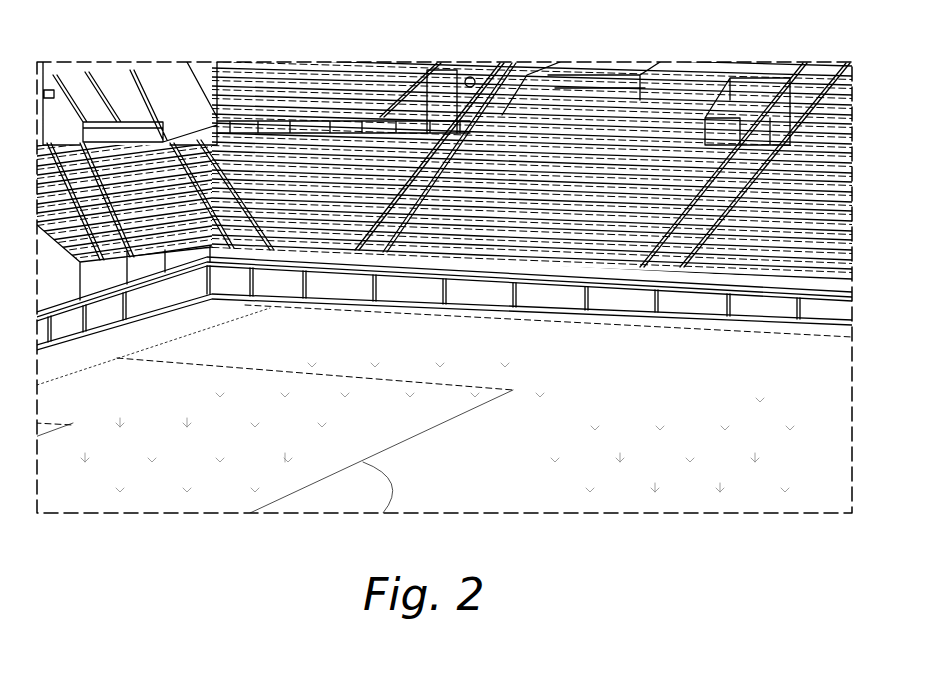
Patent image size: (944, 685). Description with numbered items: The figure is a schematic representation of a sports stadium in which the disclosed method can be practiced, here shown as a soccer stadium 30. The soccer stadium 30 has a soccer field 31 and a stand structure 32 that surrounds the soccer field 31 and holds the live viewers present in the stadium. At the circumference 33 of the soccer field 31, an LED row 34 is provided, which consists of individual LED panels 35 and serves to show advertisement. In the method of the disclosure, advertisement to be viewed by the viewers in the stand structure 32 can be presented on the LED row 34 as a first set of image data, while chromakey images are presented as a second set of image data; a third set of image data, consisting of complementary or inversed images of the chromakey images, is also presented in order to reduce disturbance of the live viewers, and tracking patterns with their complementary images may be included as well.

The soccer stadium 30 is at (620, 474).
The soccer field 31 is at (260, 467).
The stand structure 32 is at (505, 100).
The circumference 33 is at (279, 312).
The LED row 34 is at (440, 306).
The LED panels 35 is at (555, 297).